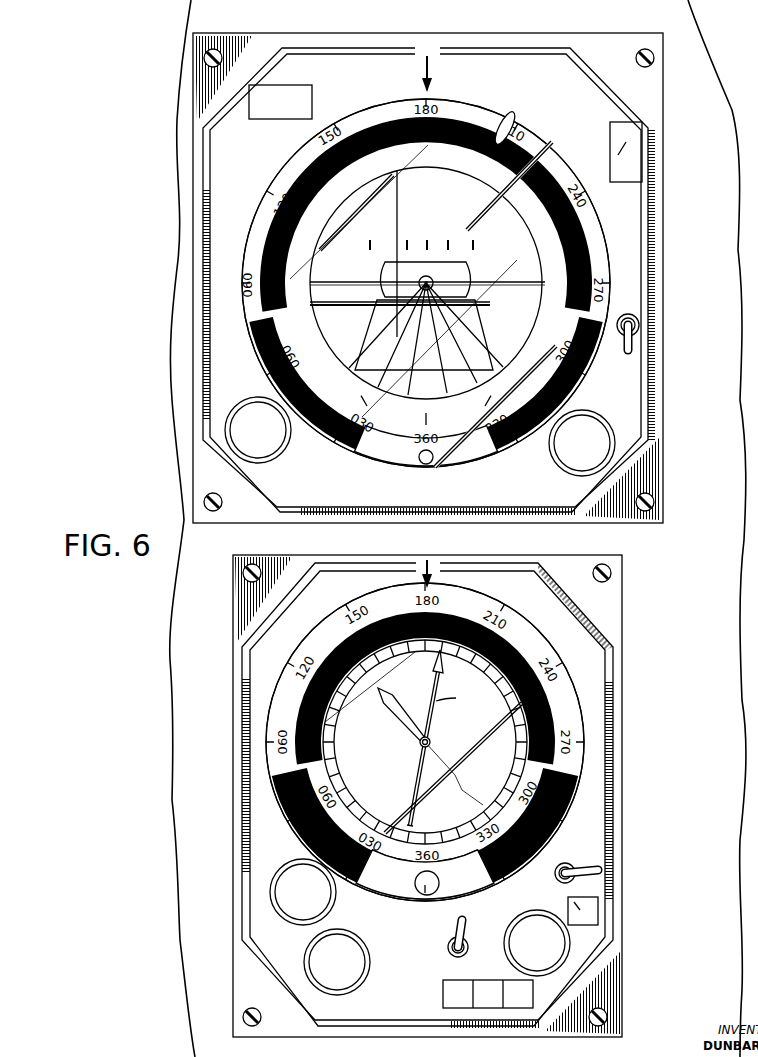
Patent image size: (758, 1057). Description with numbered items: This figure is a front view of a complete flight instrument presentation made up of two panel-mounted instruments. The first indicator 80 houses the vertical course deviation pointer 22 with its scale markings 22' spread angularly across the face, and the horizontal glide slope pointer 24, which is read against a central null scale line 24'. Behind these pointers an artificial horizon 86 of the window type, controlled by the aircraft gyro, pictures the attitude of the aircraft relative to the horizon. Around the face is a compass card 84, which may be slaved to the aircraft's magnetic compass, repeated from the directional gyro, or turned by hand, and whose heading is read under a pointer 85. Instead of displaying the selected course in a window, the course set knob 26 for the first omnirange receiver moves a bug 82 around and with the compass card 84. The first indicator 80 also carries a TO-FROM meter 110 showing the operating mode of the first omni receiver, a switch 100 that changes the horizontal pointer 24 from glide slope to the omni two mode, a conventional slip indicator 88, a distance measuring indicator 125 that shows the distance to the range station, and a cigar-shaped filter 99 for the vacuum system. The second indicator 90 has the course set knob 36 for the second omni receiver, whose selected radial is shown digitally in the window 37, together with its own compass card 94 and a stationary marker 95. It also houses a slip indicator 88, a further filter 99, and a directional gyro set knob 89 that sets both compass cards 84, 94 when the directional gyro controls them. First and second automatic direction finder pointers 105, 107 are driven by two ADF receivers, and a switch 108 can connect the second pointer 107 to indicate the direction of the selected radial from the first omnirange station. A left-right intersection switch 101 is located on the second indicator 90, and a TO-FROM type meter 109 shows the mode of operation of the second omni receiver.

The distance measuring indicator 125 is at (312, 88).
The pointer 85 is at (432, 74).
The bug 82 is at (511, 112).
The vertical course deviation pointer 22 is at (416, 253).
The scale markings 22' is at (441, 232).
The artificial horizon 86 is at (476, 268).
The central null scale line 24' is at (427, 272).
The horizontal glide slope pointer 24 is at (421, 295).
The compass card 84 is at (590, 220).
The TO-FROM meter 110 is at (642, 140).
The first indicator 80 is at (670, 191).
The switch 100 is at (634, 342).
The course set knob 26 is at (602, 415).
The filters 99 is at (284, 448).
The slip indicator 88 is at (463, 453).
The second indicator 90 is at (630, 636).
The stationary marker 95 is at (432, 580).
The compass card 94 is at (522, 636).
The first automatic direction finder pointer 105 is at (437, 722).
The second automatic direction finder pointer 107 is at (400, 721).
The left-right intersection switch 101 is at (602, 869).
The TO-FROM type meter 109 is at (598, 906).
The course set knob 36 is at (570, 944).
The switch 108 is at (455, 927).
The window 37 is at (442, 997).
The directional gyro set knob 89 is at (336, 896).